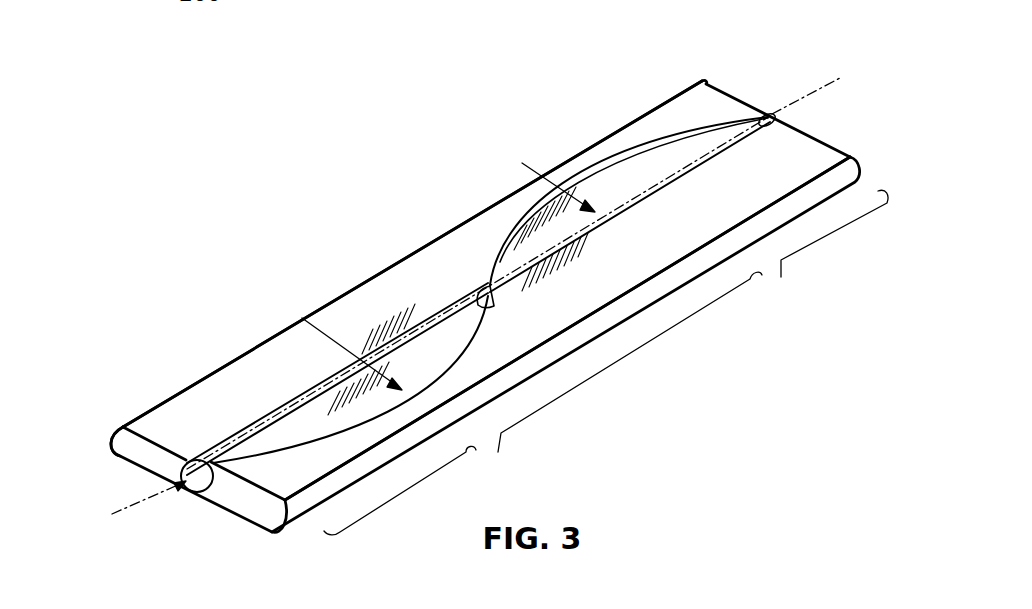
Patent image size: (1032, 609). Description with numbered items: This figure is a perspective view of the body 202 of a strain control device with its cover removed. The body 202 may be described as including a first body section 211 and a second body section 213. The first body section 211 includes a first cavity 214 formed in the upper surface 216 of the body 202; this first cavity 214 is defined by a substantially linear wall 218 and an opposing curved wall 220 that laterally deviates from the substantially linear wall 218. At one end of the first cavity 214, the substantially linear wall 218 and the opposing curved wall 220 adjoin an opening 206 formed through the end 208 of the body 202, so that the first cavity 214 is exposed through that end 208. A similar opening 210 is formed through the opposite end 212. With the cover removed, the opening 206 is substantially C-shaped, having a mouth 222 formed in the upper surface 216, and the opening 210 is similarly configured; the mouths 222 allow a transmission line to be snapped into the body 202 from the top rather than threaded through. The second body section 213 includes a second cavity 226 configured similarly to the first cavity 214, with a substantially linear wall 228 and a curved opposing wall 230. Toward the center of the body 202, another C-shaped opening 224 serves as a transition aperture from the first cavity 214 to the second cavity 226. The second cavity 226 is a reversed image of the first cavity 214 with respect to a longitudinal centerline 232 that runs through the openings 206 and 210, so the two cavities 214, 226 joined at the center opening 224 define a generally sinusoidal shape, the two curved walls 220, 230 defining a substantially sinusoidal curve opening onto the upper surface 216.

The body 202 is at (353, 307).
The opening 206 is at (213, 486).
The end 208 is at (125, 458).
The opening 210 is at (773, 117).
The first body section 211 is at (498, 452).
The opposite end 212 is at (716, 88).
The second body section 213 is at (781, 277).
The first cavity 214 is at (318, 372).
The upper surface 216 is at (192, 404).
The substantially linear wall 218 is at (297, 405).
The opposing curved wall 220 is at (300, 396).
The mouth 222 is at (184, 470).
The C-shaped opening 224 is at (482, 292).
The second cavity 226 is at (565, 197).
The substantially linear wall 228 is at (640, 195).
The curved opposing wall 230 is at (512, 223).
The longitudinal centerline 232 is at (788, 108).